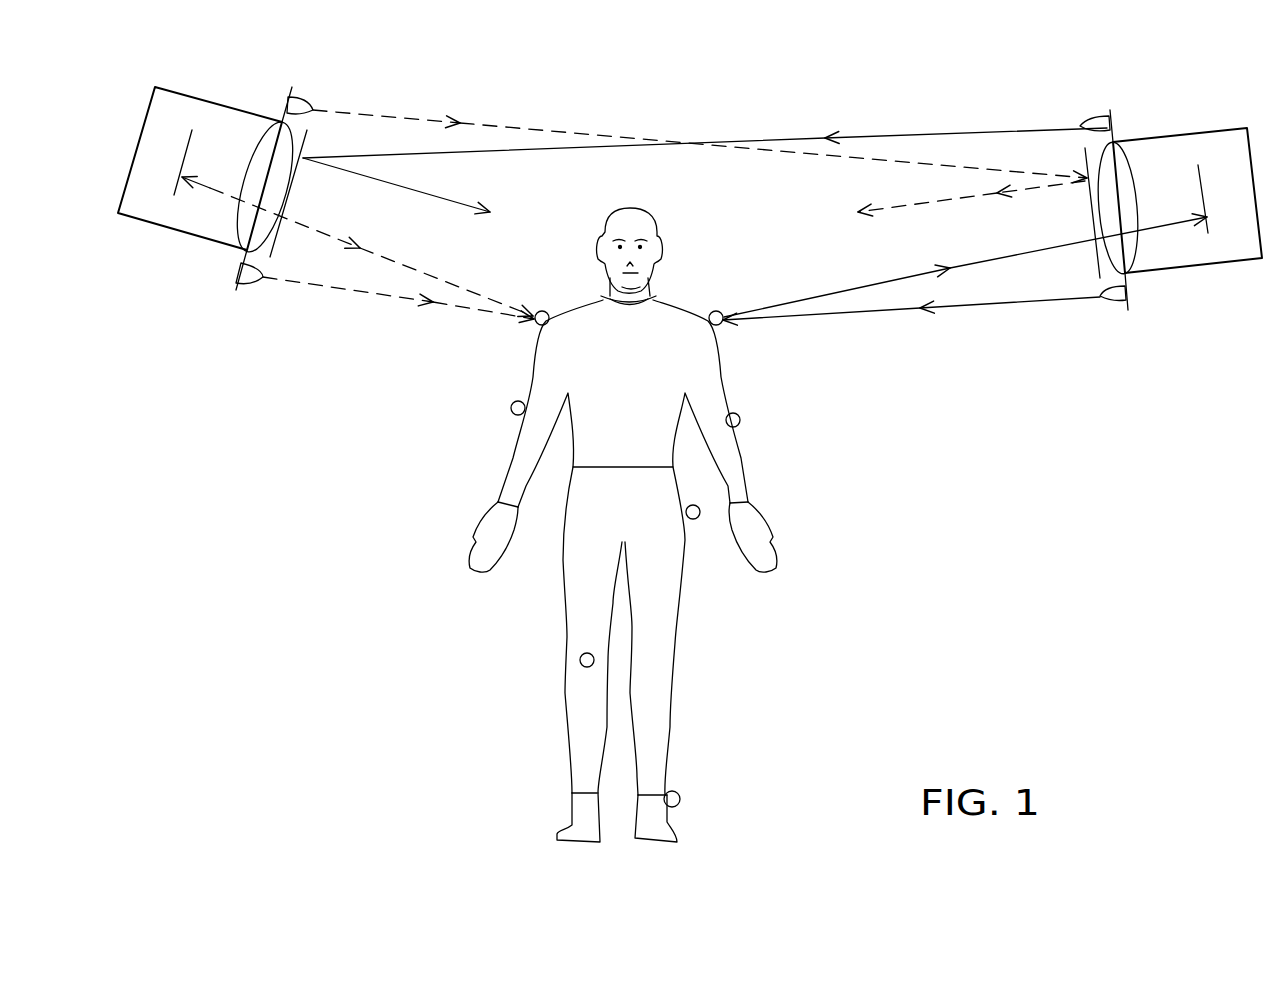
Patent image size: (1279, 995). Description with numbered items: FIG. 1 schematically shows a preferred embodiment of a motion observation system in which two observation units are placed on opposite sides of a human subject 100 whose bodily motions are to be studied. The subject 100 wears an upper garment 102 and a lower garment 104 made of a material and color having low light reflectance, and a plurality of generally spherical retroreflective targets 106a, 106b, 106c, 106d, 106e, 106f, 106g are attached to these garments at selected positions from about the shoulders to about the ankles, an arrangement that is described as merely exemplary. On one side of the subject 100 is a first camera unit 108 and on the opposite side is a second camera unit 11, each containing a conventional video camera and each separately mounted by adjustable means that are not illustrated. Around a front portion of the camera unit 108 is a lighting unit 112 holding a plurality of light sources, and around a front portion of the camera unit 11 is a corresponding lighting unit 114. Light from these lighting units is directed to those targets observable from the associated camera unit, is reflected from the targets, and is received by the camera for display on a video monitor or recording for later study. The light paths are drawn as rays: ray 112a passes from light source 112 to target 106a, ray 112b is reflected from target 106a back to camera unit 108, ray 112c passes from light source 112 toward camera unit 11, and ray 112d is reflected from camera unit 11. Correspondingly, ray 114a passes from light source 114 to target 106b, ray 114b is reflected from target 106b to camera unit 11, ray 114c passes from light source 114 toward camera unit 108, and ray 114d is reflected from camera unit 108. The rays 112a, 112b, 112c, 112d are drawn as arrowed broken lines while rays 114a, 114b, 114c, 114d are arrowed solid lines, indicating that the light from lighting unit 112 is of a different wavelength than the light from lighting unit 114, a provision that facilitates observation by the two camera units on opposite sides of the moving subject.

The second camera unit 11 is at (1213, 128).
The human subject 100 is at (662, 232).
The upper garment 102 is at (537, 373).
The lower garment 104 is at (671, 663).
The target 106a is at (534, 330).
The target 106b is at (720, 328).
The target 106c is at (513, 415).
The target 106d is at (740, 423).
The target 106e is at (695, 519).
The target 106f is at (580, 663).
The target 106g is at (680, 799).
The camera unit 108 is at (177, 93).
The lighting unit 112 is at (300, 97).
The light ray 112a is at (347, 289).
The light ray 112b is at (457, 285).
The light ray 112c is at (435, 118).
The light ray 112d is at (963, 197).
The lighting unit 114 is at (1085, 120).
The light ray 114a is at (982, 306).
The light ray 114b is at (908, 280).
The light ray 114c is at (880, 134).
The light ray 114d is at (427, 193).